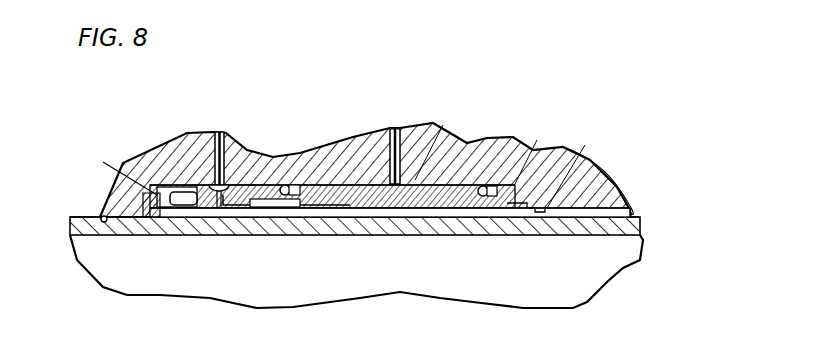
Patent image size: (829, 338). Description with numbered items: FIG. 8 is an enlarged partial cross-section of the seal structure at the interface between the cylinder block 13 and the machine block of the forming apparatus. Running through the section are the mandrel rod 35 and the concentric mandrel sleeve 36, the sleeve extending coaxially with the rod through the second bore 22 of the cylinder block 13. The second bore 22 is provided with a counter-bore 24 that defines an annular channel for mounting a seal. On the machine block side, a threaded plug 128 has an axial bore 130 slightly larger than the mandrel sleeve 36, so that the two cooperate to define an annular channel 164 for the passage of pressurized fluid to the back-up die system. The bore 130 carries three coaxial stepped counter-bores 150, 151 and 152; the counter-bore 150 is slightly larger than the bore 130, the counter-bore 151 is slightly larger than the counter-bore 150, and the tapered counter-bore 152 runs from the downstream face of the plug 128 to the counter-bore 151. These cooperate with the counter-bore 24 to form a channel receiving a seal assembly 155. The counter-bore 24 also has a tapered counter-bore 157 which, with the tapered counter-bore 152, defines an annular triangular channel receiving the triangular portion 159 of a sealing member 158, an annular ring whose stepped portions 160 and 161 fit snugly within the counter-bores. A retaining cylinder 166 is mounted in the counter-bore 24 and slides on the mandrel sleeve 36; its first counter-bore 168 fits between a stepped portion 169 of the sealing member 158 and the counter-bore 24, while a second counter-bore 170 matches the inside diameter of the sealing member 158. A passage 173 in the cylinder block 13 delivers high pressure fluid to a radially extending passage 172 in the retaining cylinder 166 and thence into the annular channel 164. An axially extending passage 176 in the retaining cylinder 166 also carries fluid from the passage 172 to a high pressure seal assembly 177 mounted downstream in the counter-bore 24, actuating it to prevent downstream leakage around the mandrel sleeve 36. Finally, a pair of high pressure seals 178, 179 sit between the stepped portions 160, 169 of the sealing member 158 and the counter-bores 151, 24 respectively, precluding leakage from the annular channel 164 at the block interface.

The cylinder block 13 is at (167, 152).
The second bore 22 is at (103, 217).
The counter-bore 24 is at (118, 171).
The mandrel rod 35 is at (593, 268).
The mandrel sleeve 36 is at (90, 221).
The threaded plug 128 is at (603, 172).
The bore 130 is at (624, 216).
The counter-bore 150 is at (585, 145).
The counter-bore 151 is at (537, 140).
The tapered counter-bore 152 is at (443, 125).
The seal assembly 155 is at (335, 108).
The tapered counter-bore 157 is at (376, 178).
The sealing member 158 is at (453, 212).
The triangular portion 159 is at (407, 130).
The stepped portion 160 is at (515, 210).
The stepped portion 161 is at (422, 210).
The annular channel 164 is at (363, 220).
The retaining cylinder 166 is at (237, 200).
The first counter-bore 168 is at (260, 197).
The stepped portion 169 is at (280, 210).
The second counter-bore 170 is at (228, 212).
The radially extending passage 172 is at (216, 210).
The passage 173 is at (219, 130).
The axially extending passage 176 is at (205, 208).
The high pressure seal assembly 177 is at (165, 210).
The high pressure seal 178 is at (468, 186).
The high pressure seal 179 is at (289, 184).